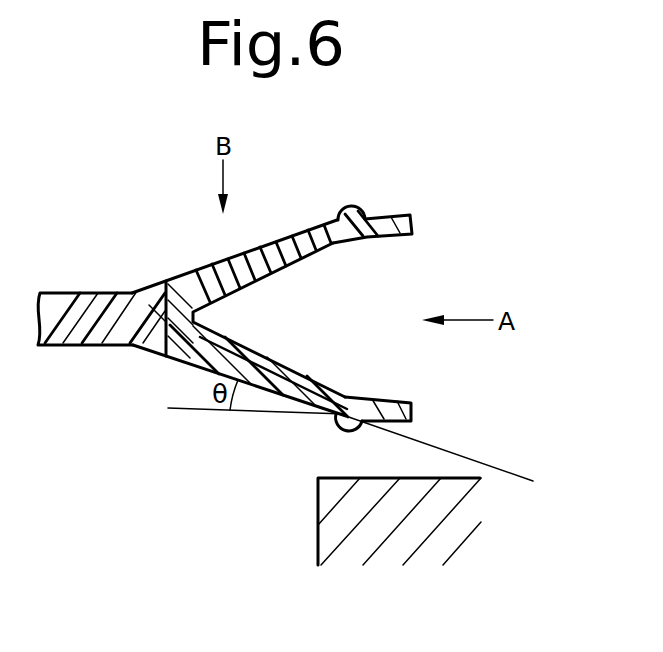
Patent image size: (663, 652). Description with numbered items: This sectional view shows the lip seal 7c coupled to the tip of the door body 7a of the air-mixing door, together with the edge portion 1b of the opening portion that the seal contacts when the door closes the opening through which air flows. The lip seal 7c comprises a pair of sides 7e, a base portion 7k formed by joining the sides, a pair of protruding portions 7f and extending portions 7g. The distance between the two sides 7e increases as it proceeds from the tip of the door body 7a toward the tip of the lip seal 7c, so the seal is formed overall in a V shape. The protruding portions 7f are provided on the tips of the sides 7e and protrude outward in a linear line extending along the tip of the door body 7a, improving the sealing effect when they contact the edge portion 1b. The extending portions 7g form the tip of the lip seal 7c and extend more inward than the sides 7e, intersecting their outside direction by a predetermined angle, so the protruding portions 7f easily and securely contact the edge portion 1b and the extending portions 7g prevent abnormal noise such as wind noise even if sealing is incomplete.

The door body 7a is at (68, 300).
The base portion 7k is at (184, 318).
The lip seal 7c is at (297, 228).
The sides 7e is at (294, 263).
The protruding portions 7f is at (356, 212).
The extending portions 7g is at (394, 241).
The edge portion 1b is at (317, 527).